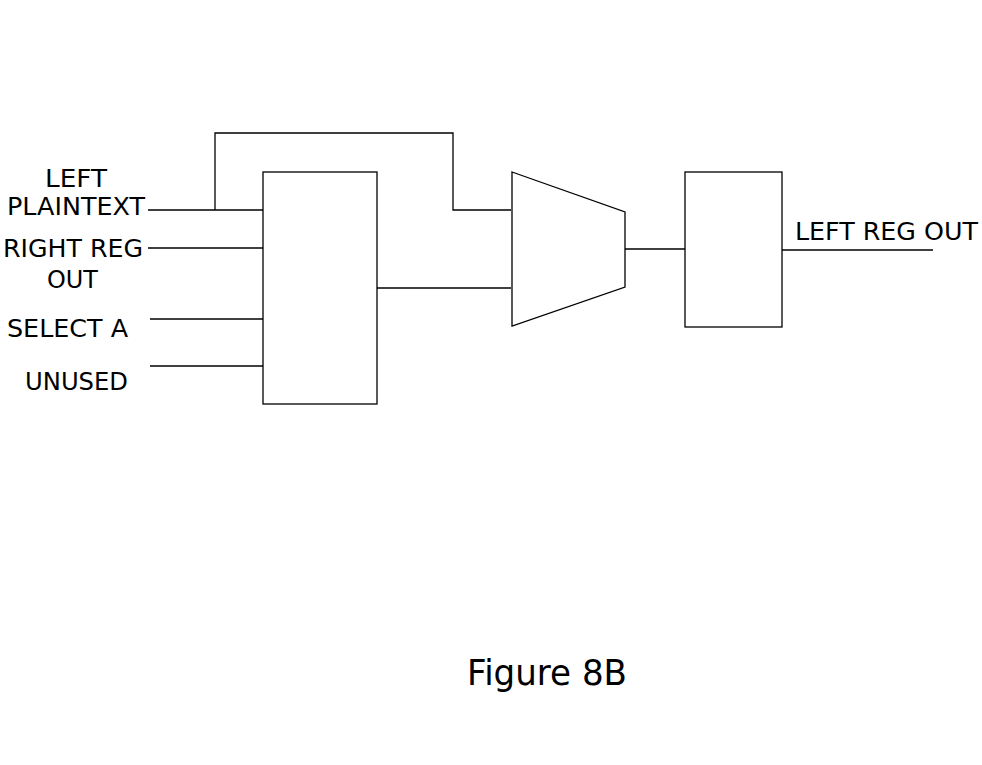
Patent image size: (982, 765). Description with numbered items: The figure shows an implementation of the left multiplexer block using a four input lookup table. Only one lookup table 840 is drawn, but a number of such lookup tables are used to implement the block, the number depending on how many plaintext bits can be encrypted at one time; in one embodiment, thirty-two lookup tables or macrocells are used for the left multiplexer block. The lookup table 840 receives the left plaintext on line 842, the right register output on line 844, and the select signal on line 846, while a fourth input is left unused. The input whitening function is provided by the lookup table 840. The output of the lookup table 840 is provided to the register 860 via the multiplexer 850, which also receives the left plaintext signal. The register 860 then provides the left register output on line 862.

The left plaintext line 842 is at (329, 188).
The right register output line 844 is at (205, 263).
The select signal line 846 is at (206, 339).
The lookup table 840 is at (387, 288).
The multiplexer 850 is at (598, 249).
The register 860 is at (733, 249).
The left register output line 862 is at (857, 267).